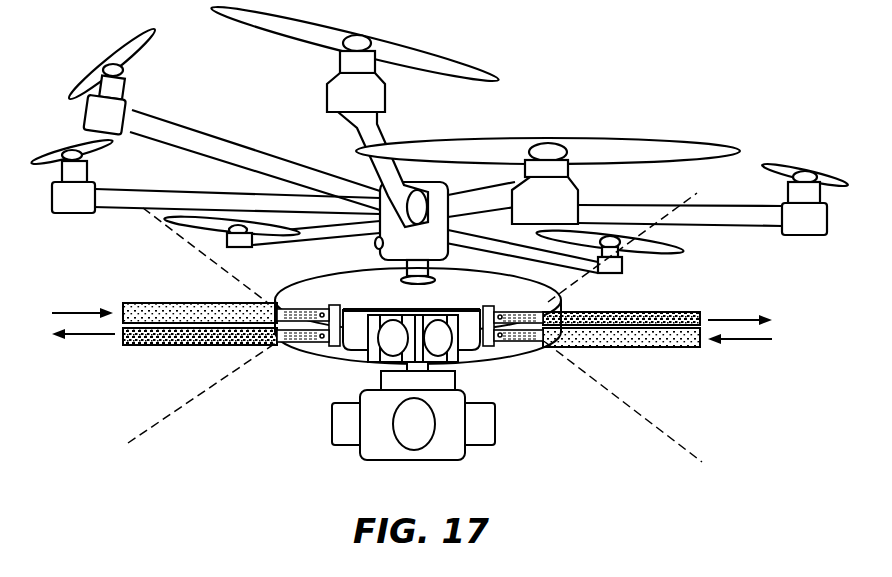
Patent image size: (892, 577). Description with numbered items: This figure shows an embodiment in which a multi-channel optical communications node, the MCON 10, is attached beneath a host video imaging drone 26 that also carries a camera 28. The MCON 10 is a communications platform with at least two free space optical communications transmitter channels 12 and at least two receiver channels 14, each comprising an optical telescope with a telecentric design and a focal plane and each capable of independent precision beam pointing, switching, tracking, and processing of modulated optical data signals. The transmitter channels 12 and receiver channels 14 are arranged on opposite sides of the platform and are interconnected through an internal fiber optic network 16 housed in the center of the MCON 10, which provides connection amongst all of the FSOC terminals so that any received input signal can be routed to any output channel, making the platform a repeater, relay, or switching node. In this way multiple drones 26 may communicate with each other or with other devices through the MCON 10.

The MCON 10 is at (270, 449).
The FSOC transmitter channel 12 is at (525, 312).
The FSOC receiver channel 14 is at (290, 304).
The internal fiber optic network 16 is at (477, 353).
The drone 26 is at (543, 92).
The camera 28 is at (497, 428).